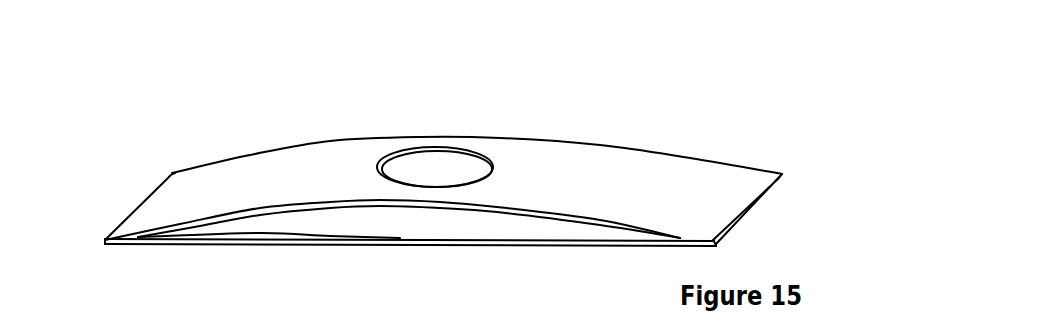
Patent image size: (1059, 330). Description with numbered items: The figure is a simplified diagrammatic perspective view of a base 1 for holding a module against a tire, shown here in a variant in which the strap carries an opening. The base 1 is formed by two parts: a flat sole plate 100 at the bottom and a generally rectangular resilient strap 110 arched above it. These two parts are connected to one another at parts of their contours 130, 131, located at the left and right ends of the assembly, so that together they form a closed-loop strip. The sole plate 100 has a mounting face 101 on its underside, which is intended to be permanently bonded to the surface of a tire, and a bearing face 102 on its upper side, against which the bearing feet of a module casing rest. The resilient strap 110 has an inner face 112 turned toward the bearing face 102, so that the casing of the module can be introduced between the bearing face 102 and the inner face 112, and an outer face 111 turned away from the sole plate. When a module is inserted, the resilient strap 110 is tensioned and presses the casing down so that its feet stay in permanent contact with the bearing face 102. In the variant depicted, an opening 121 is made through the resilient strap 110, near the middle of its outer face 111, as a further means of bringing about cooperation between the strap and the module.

The base 1 is at (693, 118).
The sole plate 100 is at (333, 240).
The mounting face 101 is at (483, 247).
The bearing face 102 is at (462, 222).
The resilient strap 110 is at (340, 142).
The outer face 111 is at (558, 183).
The inner face 112 is at (548, 217).
The opening 121 is at (427, 150).
The contour 130 is at (140, 200).
The contour 131 is at (748, 213).